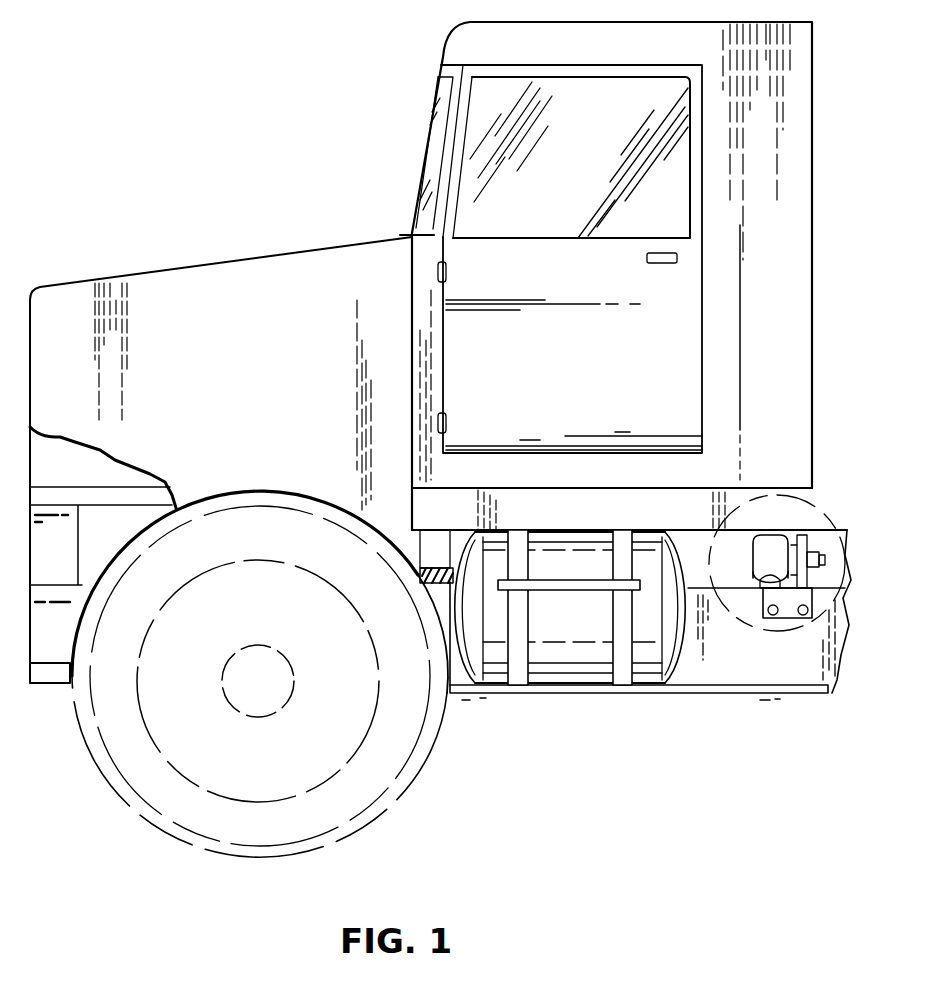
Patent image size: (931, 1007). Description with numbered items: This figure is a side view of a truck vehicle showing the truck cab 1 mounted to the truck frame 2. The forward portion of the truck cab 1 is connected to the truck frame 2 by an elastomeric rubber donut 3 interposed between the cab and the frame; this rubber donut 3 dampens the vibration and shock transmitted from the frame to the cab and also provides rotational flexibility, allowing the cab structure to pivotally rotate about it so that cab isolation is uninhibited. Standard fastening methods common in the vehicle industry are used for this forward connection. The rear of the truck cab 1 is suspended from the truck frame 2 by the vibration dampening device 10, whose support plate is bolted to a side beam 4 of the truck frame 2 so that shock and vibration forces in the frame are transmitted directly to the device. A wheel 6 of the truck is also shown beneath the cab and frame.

The truck cab 1 is at (310, 248).
The truck frame 2 is at (458, 692).
The rubber donut 3 is at (434, 590).
The side beam 4 is at (735, 668).
The wheel 6 is at (414, 765).
The vibration dampening device 10 is at (845, 597).